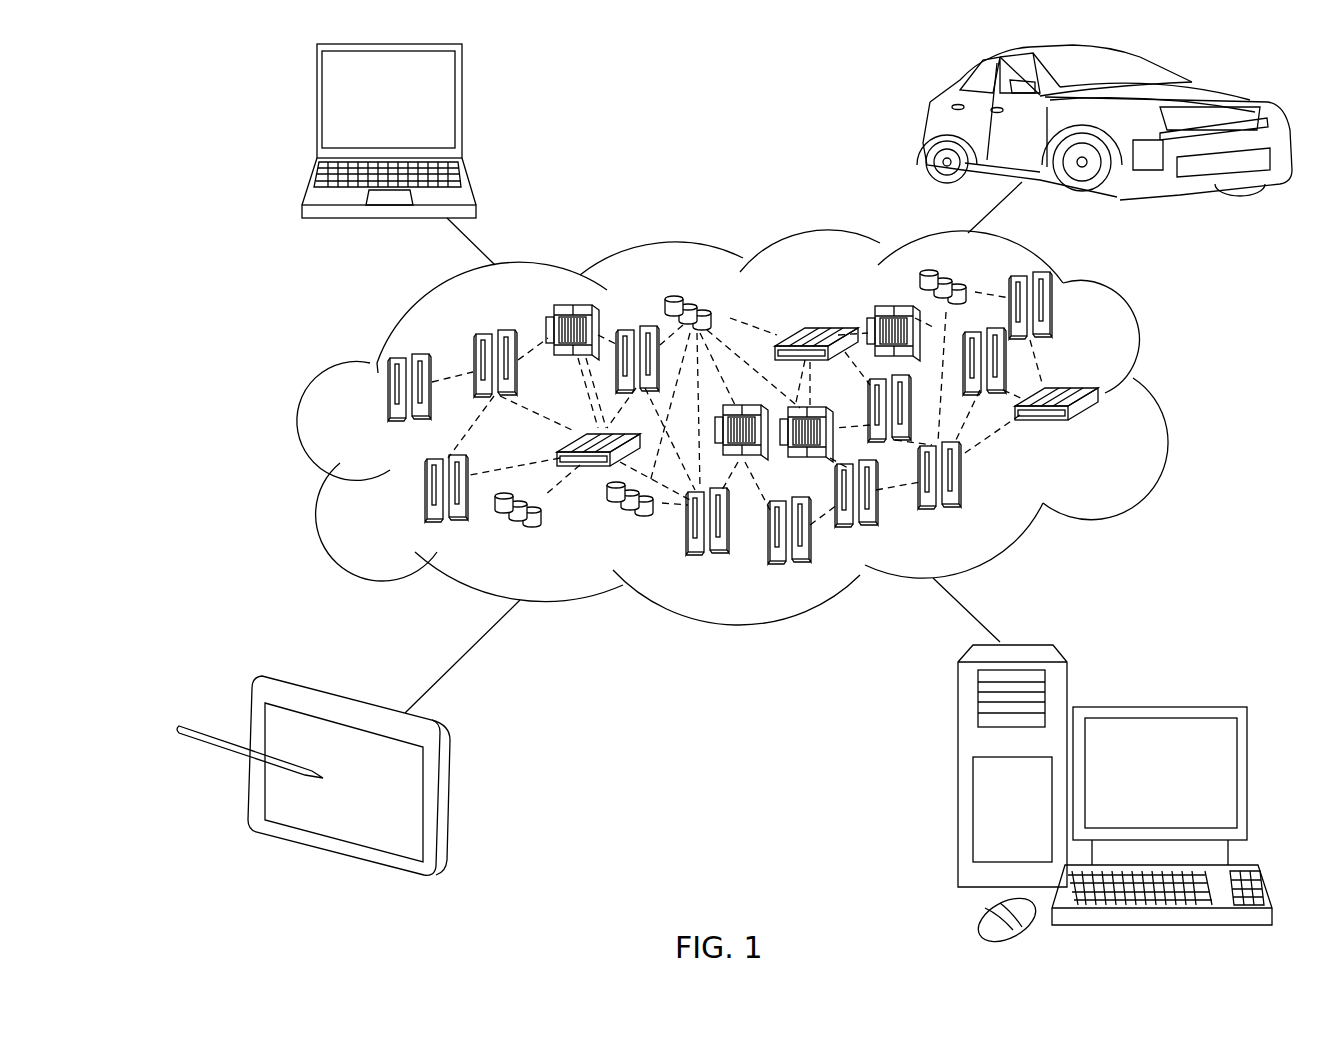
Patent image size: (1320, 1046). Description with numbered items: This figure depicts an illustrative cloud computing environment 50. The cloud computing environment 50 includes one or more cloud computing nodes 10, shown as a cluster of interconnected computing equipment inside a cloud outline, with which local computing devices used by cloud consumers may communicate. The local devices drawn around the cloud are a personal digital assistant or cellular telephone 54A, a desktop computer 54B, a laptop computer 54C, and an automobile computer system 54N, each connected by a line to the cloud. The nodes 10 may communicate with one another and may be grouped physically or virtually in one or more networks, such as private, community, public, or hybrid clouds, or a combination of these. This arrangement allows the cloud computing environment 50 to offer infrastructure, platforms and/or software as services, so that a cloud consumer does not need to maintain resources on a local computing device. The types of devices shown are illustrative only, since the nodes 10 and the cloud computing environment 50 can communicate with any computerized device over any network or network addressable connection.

The cloud computing nodes 10 is at (1097, 429).
The cloud computing environment 50 is at (1157, 398).
The personal digital assistant (PDA) or cellular telephone 54A is at (450, 803).
The desktop computer 54B is at (1158, 707).
The laptop computer 54C is at (462, 107).
The automobile computer system 54N is at (925, 124).